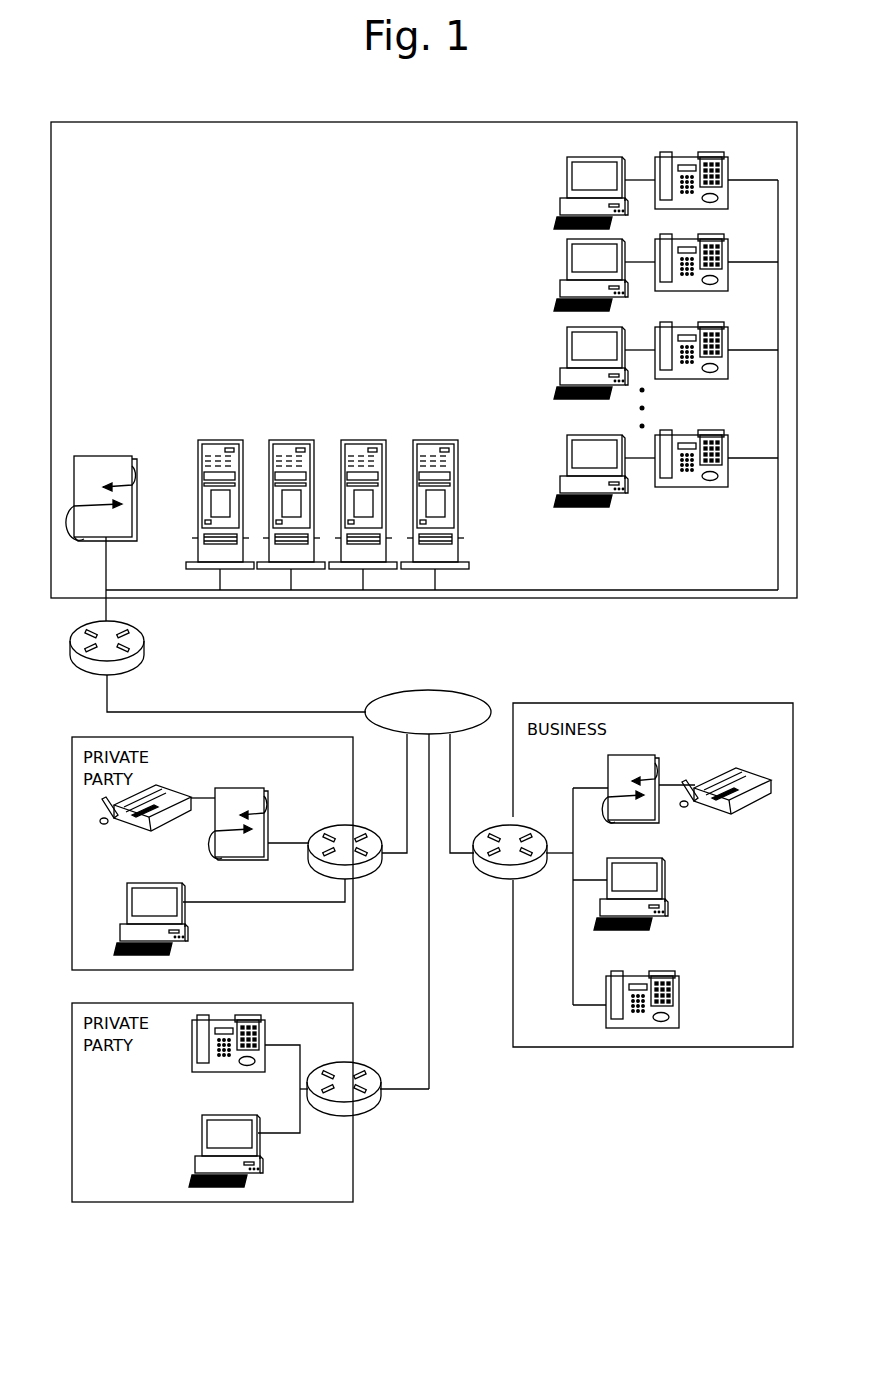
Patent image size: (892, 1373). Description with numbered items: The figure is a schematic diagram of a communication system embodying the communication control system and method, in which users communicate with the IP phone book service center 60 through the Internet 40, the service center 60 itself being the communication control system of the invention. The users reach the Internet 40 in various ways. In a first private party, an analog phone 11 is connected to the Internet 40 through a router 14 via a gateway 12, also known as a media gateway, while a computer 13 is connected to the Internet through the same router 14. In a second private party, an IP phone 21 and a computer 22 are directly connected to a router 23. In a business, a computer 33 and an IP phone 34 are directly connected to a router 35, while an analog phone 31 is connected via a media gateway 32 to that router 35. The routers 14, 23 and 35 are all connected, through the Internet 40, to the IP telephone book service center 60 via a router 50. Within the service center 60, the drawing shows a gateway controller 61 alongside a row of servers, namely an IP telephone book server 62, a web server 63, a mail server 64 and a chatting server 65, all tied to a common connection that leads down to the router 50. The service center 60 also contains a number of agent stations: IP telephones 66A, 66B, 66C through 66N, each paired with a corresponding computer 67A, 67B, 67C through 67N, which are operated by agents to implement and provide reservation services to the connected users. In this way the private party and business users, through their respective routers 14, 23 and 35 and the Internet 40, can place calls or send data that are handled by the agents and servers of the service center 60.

The analog phone 11 is at (168, 788).
The gateway 12 is at (236, 788).
The computer 13 is at (150, 883).
The router 14 is at (332, 826).
The IP phone 21 is at (192, 1043).
The computer 22 is at (202, 1132).
The router 23 is at (330, 1063).
The analog phone 31 is at (749, 768).
The media gateway 32 is at (630, 755).
The computer 33 is at (665, 877).
The IP phone 34 is at (680, 1003).
The router 35 is at (522, 826).
The Internet 40 is at (432, 690).
The router 50 is at (144, 641).
The IP phone book service center 60 is at (720, 598).
The gateway controller 61 is at (100, 456).
The IP telephone book server 62 is at (219, 440).
The web server 63 is at (290, 440).
The mail server 64 is at (362, 440).
The chatting server 65 is at (434, 440).
The IP telephone 66A is at (695, 152).
The IP telephone 66B is at (695, 234).
The IP telephone 66C is at (695, 322).
The IP telephone 66N is at (695, 430).
The computer 67A is at (567, 180).
The computer 67B is at (567, 262).
The computer 67C is at (567, 350).
The computer 67N is at (567, 458).